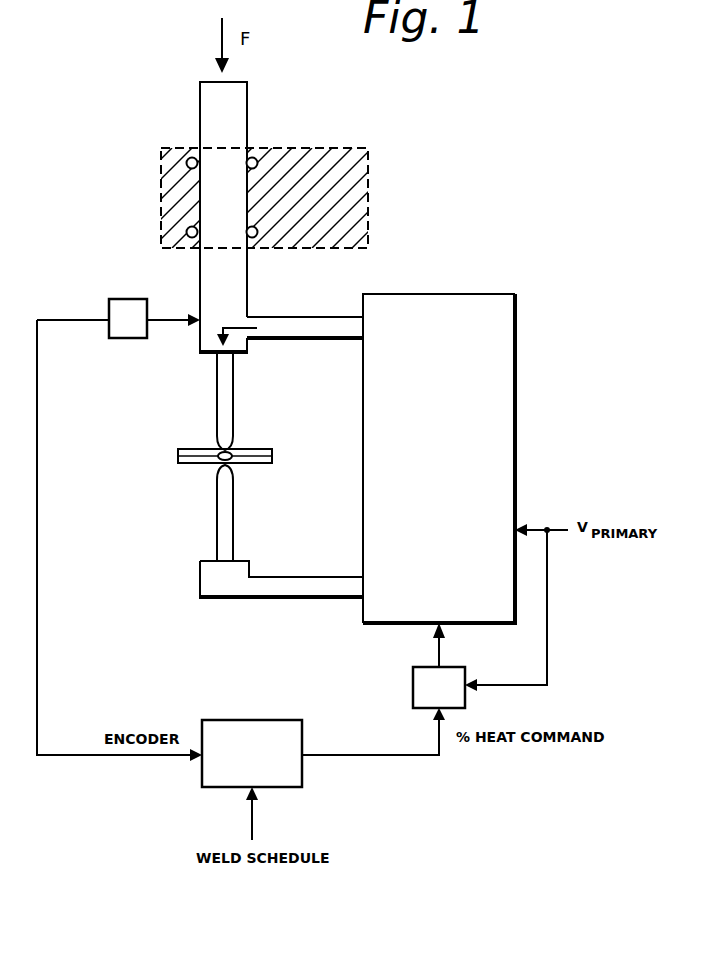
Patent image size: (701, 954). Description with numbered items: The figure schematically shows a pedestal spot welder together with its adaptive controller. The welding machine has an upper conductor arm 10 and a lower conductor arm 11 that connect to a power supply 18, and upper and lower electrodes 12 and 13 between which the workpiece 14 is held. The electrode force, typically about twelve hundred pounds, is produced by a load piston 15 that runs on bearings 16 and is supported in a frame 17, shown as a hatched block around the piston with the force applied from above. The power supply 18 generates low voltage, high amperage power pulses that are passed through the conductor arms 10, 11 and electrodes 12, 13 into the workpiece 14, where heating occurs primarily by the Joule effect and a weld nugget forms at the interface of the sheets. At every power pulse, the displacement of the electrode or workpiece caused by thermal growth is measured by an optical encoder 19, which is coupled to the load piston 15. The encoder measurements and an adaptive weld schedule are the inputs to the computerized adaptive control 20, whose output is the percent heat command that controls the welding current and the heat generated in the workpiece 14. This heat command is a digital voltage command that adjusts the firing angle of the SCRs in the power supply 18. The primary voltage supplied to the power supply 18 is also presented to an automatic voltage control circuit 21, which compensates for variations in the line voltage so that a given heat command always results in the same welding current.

The upper conductor arm 10 is at (330, 340).
The lower conductor arm 11 is at (308, 598).
The electrode 12 is at (217, 366).
The electrode 13 is at (217, 504).
The workpiece 14 is at (178, 456).
The load piston 15 is at (235, 118).
The bearings 16 is at (186, 163).
The frame 17 is at (340, 153).
The power supply 18 is at (517, 352).
The optical encoder 19 is at (121, 299).
The adaptive control 20 is at (218, 720).
The automatic voltage control circuit 21 is at (413, 683).